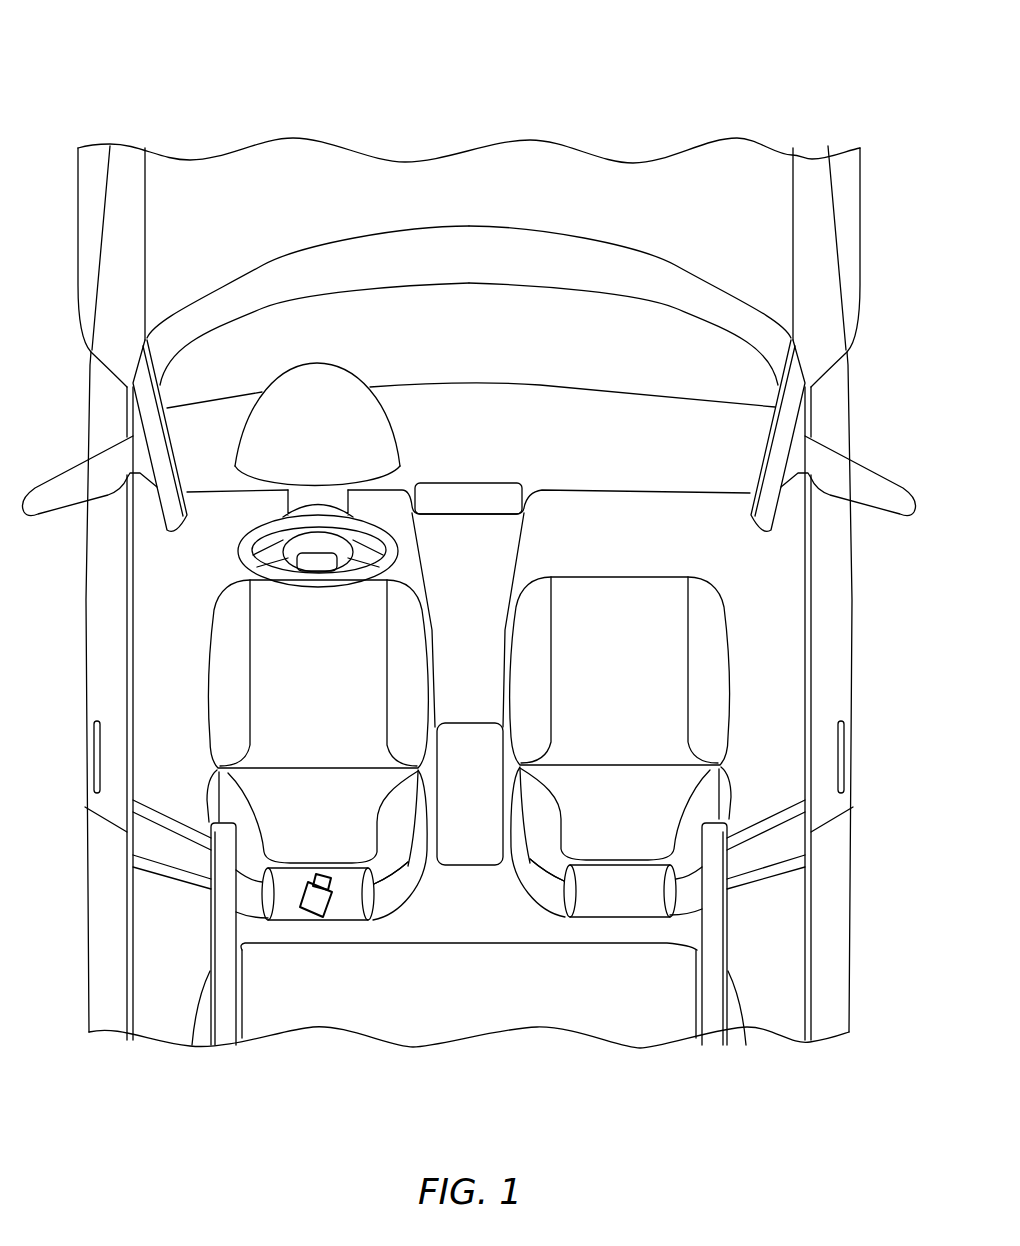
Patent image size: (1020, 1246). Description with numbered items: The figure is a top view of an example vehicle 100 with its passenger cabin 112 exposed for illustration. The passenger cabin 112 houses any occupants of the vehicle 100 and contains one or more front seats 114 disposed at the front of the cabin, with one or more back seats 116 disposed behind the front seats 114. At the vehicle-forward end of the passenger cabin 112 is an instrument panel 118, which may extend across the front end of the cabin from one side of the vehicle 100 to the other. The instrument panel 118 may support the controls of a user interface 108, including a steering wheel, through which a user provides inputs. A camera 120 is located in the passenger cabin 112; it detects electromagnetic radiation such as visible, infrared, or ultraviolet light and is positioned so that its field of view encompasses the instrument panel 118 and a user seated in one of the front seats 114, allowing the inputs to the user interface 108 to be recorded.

The vehicle 100 is at (229, 86).
The user interface 108 is at (475, 525).
The passenger cabin 112 is at (742, 668).
The front seats 114 is at (530, 893).
The back seats 116 is at (527, 1000).
The instrument panel 118 is at (663, 452).
The camera 120 is at (313, 903).